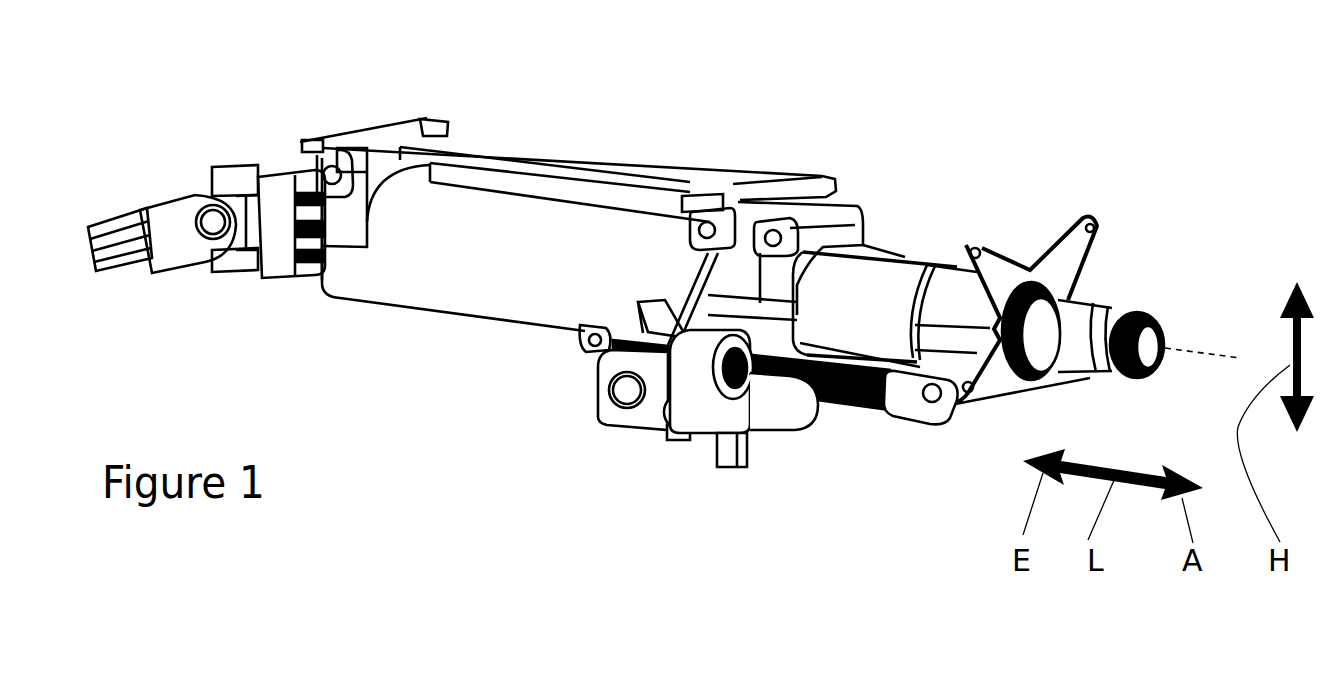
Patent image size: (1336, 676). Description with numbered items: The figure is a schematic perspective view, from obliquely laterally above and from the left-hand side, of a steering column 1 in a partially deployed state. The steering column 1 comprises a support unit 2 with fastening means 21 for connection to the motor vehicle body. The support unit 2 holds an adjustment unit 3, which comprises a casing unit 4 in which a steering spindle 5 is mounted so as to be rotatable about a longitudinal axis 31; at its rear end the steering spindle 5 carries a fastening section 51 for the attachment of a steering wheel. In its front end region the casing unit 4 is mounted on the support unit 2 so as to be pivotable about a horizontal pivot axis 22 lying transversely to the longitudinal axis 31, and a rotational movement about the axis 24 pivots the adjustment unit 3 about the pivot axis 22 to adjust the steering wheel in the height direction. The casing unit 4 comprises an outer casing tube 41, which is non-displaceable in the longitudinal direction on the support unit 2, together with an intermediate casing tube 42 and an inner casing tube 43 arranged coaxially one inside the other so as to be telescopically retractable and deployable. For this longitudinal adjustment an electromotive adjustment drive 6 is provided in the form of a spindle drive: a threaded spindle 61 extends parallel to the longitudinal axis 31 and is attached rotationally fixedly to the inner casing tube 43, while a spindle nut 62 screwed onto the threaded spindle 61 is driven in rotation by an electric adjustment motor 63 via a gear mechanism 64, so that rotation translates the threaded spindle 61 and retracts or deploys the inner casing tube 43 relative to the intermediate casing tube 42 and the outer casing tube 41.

The steering column 1 is at (633, 76).
The support unit 2 is at (549, 147).
The adjustment unit 3 is at (412, 319).
The casing unit 4 is at (533, 303).
The steering spindle 5 is at (1080, 317).
The adjustment drive 6 is at (702, 460).
The fastening means 21 is at (432, 118).
The pivot axis 22 is at (296, 160).
The axis 24 is at (708, 226).
The longitudinal axis 31 is at (1234, 356).
The outer casing tube 41 is at (368, 290).
The intermediate casing tube 42 is at (853, 298).
The inner casing tube 43 is at (952, 300).
The fastening section 51 is at (1134, 313).
The threaded spindle 61 is at (853, 405).
The spindle nut 62 is at (731, 440).
The adjustment motor 63 is at (783, 417).
The gear mechanism 64 is at (683, 413).